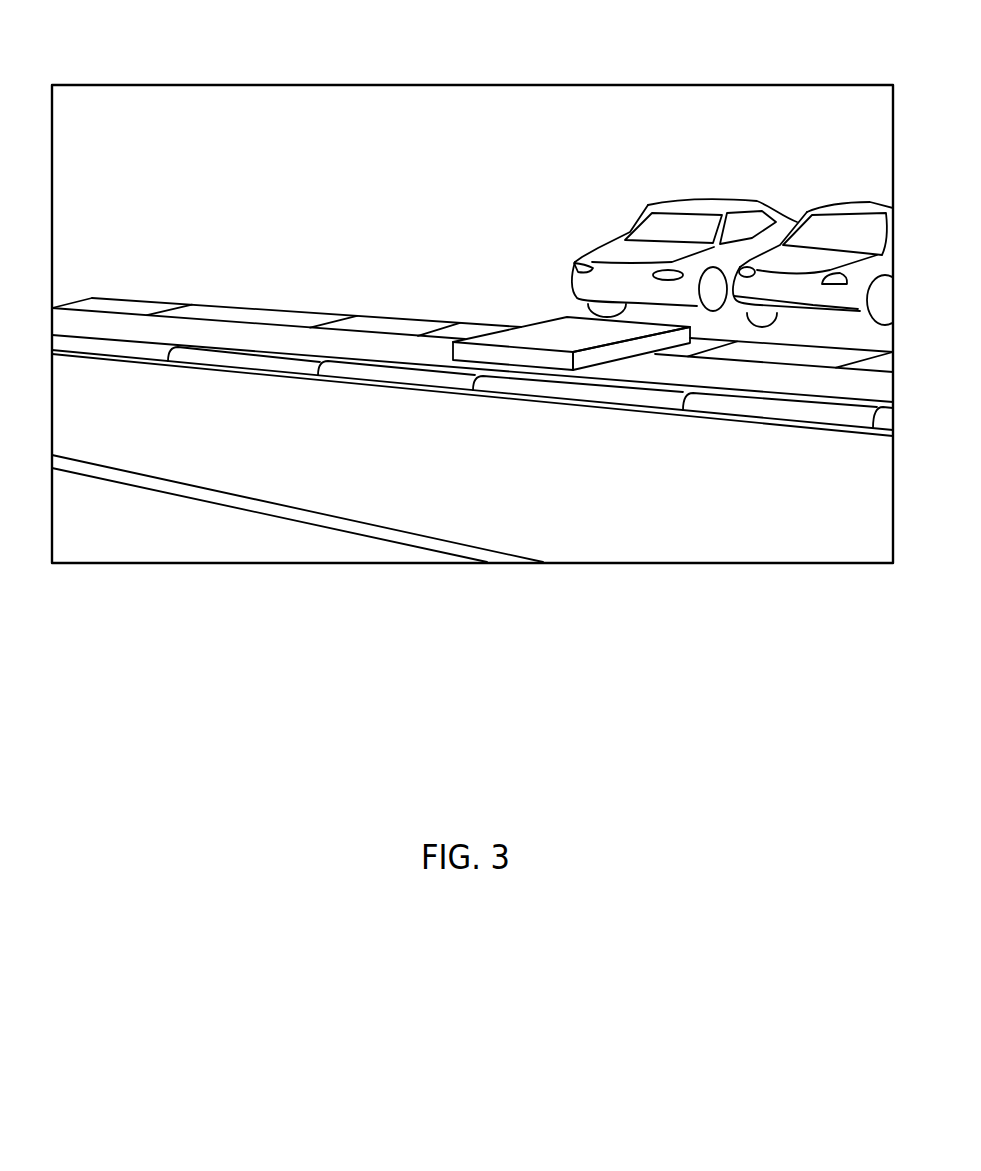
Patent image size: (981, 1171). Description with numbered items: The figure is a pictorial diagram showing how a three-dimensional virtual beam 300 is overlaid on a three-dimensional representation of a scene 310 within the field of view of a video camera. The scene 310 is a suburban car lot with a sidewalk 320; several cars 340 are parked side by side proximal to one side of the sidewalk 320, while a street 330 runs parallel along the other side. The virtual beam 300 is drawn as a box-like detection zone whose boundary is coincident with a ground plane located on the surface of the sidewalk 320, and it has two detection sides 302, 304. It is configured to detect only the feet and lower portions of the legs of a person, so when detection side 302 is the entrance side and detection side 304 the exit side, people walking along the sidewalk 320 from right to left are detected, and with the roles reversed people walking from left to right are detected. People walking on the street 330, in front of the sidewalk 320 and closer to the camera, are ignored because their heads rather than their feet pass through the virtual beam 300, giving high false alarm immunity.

The three-dimensional virtual beam 300 is at (596, 370).
The detection side 302 is at (620, 350).
The detection side 304 is at (536, 322).
The scene 310 is at (511, 46).
The sidewalk 320 is at (300, 320).
The road surface 330 is at (331, 441).
The cars 340 is at (751, 147).